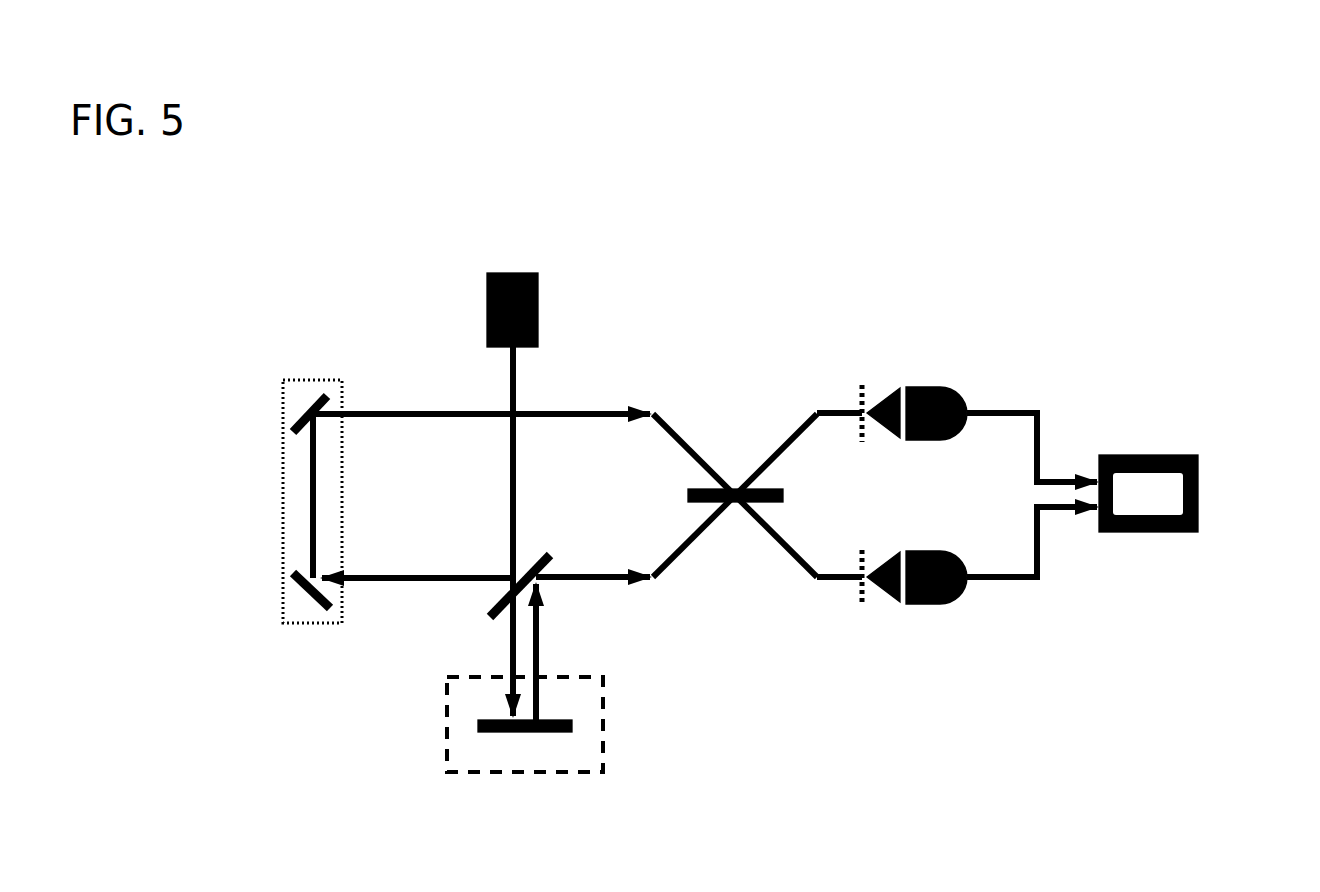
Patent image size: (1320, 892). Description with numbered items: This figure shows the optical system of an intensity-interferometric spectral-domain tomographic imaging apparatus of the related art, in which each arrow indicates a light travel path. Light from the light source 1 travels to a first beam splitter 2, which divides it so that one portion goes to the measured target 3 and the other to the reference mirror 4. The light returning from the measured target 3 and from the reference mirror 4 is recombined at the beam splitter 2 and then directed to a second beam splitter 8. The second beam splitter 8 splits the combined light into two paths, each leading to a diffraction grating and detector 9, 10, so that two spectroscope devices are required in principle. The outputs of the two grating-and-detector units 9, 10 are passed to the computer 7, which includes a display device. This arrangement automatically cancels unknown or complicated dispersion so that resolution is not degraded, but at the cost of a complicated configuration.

The light source 1 is at (552, 316).
The beam splitter 2 is at (490, 577).
The measured target 3 is at (539, 751).
The reference mirror 4 is at (266, 558).
The computer 7 is at (1134, 537).
The beam splitter 8 is at (670, 491).
The diffraction grating and detector 9 is at (938, 360).
The diffraction grating and detector 10 is at (934, 627).